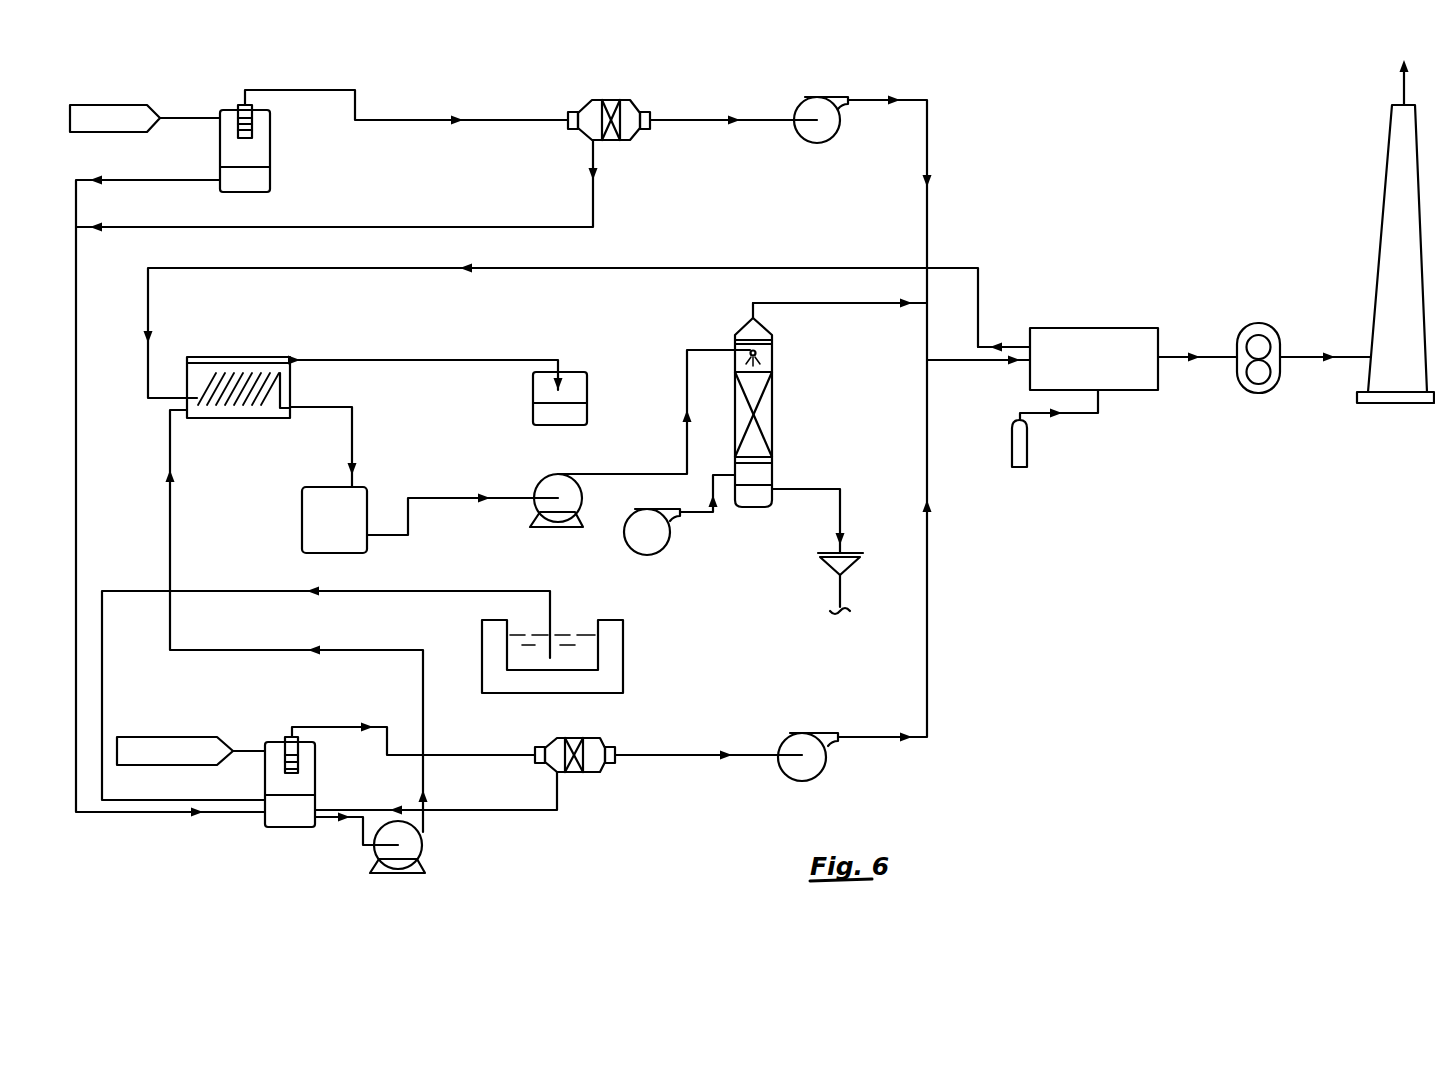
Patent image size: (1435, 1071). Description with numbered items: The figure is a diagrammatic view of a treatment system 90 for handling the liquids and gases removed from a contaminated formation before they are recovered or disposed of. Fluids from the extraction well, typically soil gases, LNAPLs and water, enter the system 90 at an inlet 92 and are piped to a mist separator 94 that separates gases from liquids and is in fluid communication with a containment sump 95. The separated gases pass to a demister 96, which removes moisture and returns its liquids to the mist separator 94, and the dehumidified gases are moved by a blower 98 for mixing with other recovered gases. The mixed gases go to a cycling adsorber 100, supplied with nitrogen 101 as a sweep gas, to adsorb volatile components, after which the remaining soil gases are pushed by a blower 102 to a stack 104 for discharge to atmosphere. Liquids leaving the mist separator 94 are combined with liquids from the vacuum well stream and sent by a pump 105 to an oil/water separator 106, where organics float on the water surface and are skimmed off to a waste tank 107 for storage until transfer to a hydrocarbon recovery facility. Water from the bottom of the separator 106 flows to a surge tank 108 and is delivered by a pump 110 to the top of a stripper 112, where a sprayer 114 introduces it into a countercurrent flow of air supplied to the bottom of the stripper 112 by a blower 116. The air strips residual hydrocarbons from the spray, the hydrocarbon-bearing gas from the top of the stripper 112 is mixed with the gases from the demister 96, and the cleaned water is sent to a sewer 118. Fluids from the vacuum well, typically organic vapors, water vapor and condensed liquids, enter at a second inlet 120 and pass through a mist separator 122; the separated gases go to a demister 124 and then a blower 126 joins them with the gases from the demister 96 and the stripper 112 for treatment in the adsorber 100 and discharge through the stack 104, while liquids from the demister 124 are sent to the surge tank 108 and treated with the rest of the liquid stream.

The treatment system 90 is at (1022, 208).
The inlet 92 is at (160, 737).
The mist separator 94 is at (315, 767).
The containment sump 95 is at (623, 632).
The demister 96 is at (592, 774).
The blower 98 is at (820, 777).
The cycling adsorber 100 is at (1093, 328).
The nitrogen 101 is at (1027, 447).
The blower 102 is at (1268, 323).
The stack 104 is at (1380, 210).
The pump 105 is at (427, 843).
The oil/water separator 106 is at (290, 385).
The waste tank 107 is at (587, 388).
The surge tank 108 is at (302, 505).
The pump 110 is at (540, 480).
The stripper 112 is at (772, 417).
The sprayer 114 is at (760, 352).
The blower 116 is at (623, 535).
The sewer 118 is at (822, 568).
The inlet 120 is at (118, 104).
The mist separator 122 is at (270, 147).
The demister 124 is at (625, 100).
The blower 126 is at (834, 96).